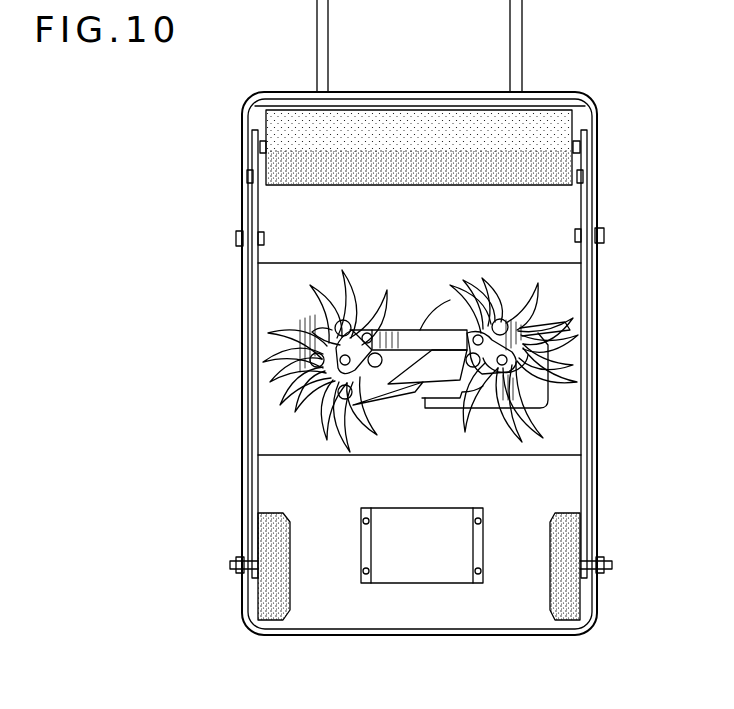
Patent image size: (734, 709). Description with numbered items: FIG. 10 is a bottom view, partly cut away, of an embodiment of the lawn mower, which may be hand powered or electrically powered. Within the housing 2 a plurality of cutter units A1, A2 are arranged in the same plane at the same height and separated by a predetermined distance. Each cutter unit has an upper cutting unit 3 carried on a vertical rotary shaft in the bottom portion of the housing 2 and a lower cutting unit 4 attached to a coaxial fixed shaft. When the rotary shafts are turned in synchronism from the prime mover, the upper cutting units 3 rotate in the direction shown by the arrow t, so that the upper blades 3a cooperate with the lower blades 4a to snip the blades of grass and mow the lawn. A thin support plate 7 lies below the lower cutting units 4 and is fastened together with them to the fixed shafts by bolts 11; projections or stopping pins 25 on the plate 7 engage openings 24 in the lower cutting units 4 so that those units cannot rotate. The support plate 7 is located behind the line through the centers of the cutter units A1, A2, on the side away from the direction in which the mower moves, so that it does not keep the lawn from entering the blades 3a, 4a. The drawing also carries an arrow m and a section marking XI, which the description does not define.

The housing 2 is at (630, 197).
The cutter unit A1 is at (342, 254).
The cutter unit A2 is at (504, 272).
The openings 24 is at (383, 304).
The stopping pins 25 is at (326, 318).
The support plate 7 is at (415, 322).
The lower blades 4a is at (528, 298).
The lower cutting unit 4 is at (532, 320).
The bolts 11 is at (352, 361).
The upper blades 3a is at (424, 420).
The upper cutting unit 3 is at (505, 408).
The arrow t is at (395, 450).
The direction of travel m is at (427, 642).
The section line XI- XI is at (229, 360).